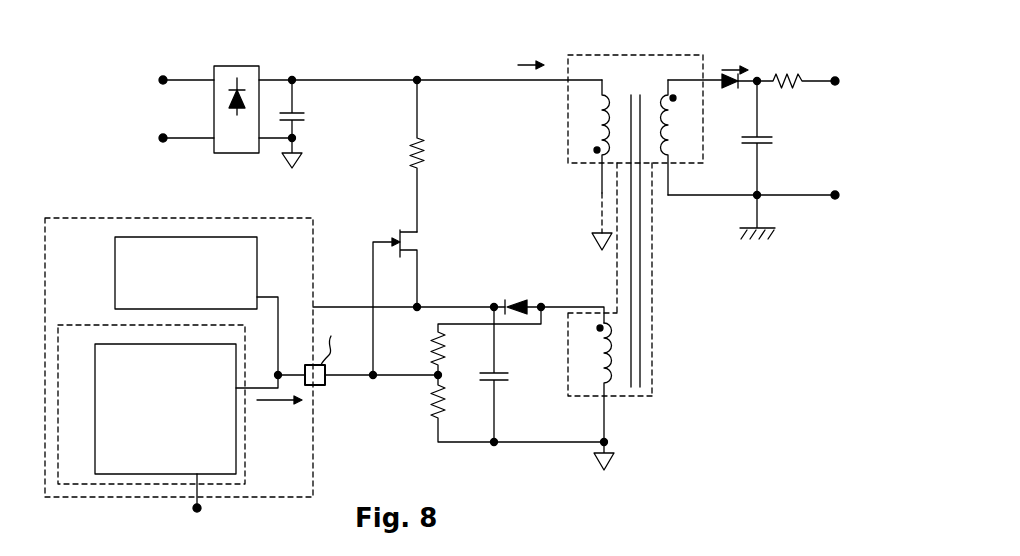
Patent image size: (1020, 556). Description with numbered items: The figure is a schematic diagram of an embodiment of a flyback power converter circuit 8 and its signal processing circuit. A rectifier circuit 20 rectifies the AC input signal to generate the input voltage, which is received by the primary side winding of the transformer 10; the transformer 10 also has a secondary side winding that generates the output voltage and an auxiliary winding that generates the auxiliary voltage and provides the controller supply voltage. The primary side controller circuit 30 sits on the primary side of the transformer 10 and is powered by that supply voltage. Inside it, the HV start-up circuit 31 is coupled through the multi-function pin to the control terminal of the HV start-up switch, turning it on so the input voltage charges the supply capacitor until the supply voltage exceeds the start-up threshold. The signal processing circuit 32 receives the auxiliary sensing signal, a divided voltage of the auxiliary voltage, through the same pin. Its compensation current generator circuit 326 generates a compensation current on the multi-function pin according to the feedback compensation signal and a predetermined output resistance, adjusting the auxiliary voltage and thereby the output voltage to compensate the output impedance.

The flyback power converter circuit 8 is at (472, 40).
The transformer 10 is at (653, 55).
The rectifier circuit 20 is at (246, 136).
The primary side controller circuit 30 is at (300, 258).
The HV start-up circuit 31 is at (244, 301).
The signal processing circuit 32 is at (84, 470).
The compensation current generator circuit 326 is at (152, 468).